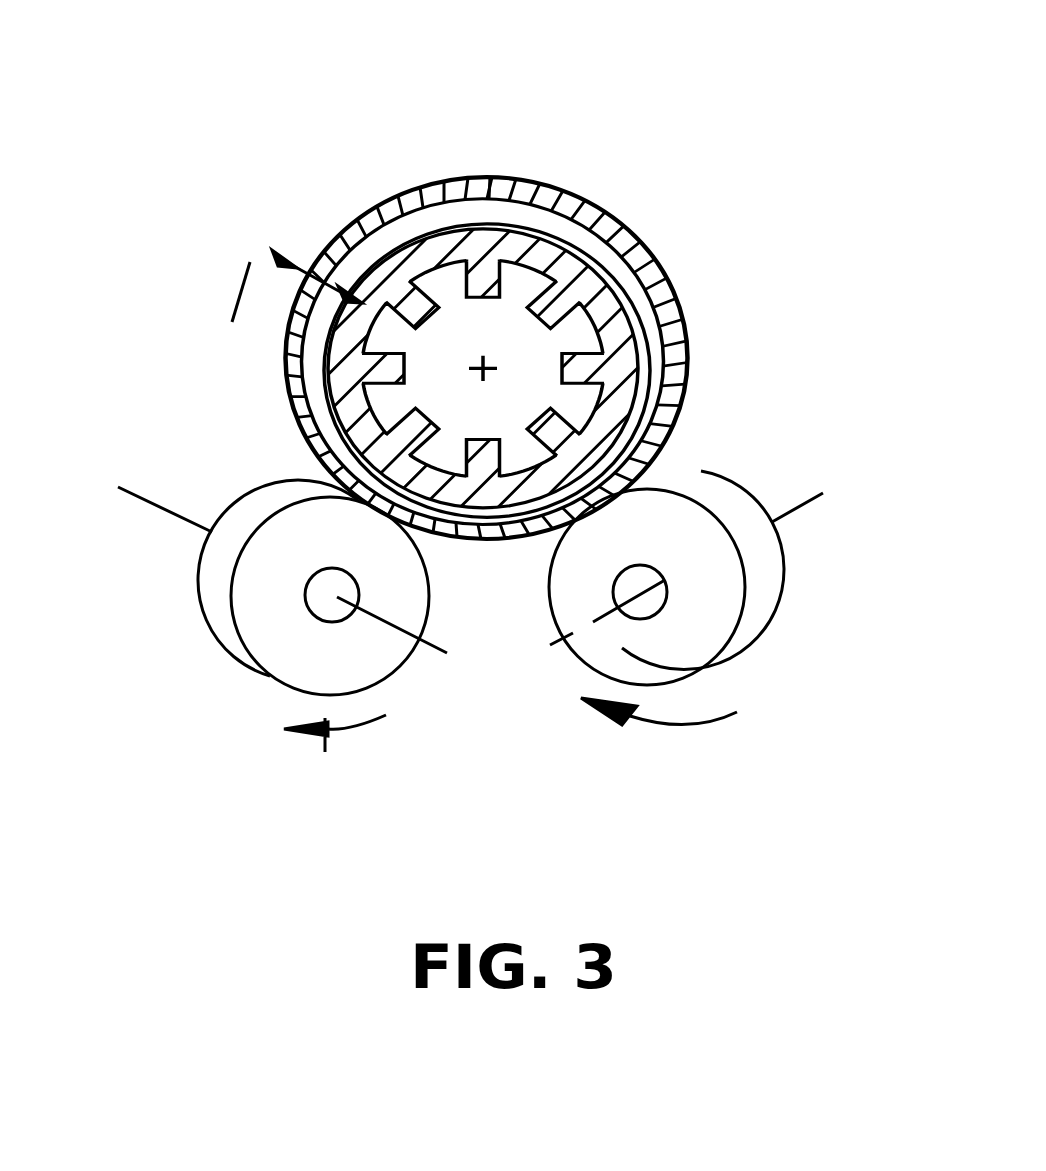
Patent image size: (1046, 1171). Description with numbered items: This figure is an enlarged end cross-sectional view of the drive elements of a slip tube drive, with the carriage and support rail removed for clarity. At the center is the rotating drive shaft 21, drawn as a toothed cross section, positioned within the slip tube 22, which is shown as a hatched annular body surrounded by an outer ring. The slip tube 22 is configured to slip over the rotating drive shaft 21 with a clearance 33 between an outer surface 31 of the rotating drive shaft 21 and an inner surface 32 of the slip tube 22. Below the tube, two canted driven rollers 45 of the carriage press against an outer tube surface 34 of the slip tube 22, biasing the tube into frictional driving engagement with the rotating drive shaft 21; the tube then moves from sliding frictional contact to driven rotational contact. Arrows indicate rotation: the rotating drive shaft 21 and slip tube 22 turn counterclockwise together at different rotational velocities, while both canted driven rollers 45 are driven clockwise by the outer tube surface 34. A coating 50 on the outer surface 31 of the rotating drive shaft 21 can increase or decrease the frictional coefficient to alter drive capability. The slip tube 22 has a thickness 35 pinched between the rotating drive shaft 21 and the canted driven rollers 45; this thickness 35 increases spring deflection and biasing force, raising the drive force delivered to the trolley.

The rotating drive shaft 21 is at (472, 240).
The slip tube 22 is at (450, 177).
The outer surface of the rotating drive shaft 31 is at (610, 260).
The inner surface of the slip tube 32 is at (575, 225).
The clearance 33 is at (440, 213).
The outer tube surface 34 is at (490, 177).
The thickness 35 is at (290, 264).
The canted driven rollers 45 is at (287, 638).
The coating 50 is at (690, 356).